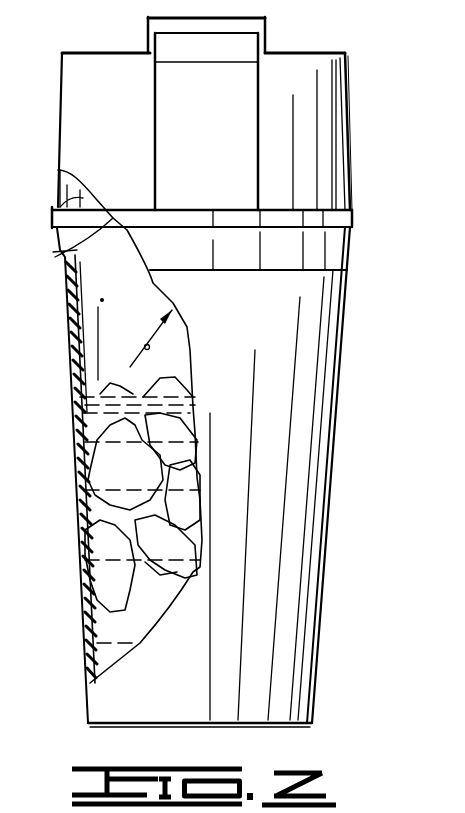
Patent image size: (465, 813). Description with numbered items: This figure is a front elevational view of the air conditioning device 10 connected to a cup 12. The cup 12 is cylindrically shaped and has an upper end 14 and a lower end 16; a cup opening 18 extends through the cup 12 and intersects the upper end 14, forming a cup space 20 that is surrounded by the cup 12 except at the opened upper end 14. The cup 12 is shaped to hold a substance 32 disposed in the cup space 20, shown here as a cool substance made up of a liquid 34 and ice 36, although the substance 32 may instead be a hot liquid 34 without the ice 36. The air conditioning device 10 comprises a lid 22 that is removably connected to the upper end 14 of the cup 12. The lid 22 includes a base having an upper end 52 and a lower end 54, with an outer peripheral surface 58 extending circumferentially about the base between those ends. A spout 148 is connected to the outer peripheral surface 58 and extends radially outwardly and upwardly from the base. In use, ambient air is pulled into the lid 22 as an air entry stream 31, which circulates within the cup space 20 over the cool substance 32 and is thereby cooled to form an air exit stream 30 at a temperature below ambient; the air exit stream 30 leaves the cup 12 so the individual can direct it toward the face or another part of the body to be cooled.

The air conditioning device 10 is at (352, 110).
The cup 12 is at (335, 432).
The upper end 14 is at (57, 192).
The lower end 16 is at (190, 727).
The cup opening 18 is at (80, 367).
The cup space 20 is at (100, 329).
The lid 22 is at (348, 75).
The air exit stream 30 is at (147, 344).
The air entry stream 31 is at (122, 340).
The substance 32 is at (98, 523).
The liquid 34 is at (102, 623).
The ice 36 is at (110, 497).
The upper end 52 is at (307, 53).
The lower end 54 is at (326, 228).
The outer peripheral surface 58 is at (348, 160).
The spout 148 is at (190, 107).